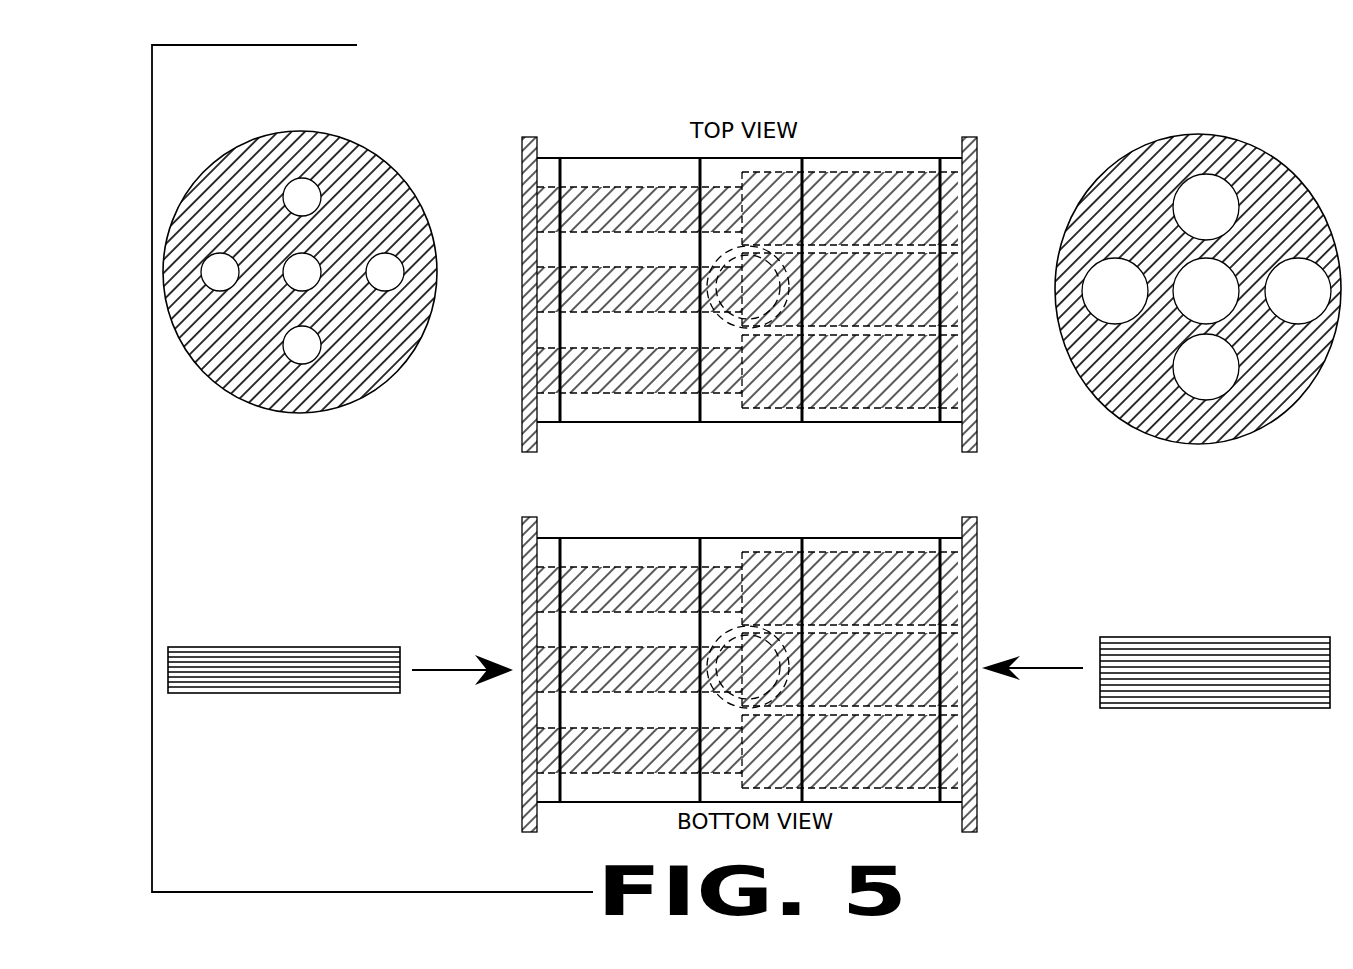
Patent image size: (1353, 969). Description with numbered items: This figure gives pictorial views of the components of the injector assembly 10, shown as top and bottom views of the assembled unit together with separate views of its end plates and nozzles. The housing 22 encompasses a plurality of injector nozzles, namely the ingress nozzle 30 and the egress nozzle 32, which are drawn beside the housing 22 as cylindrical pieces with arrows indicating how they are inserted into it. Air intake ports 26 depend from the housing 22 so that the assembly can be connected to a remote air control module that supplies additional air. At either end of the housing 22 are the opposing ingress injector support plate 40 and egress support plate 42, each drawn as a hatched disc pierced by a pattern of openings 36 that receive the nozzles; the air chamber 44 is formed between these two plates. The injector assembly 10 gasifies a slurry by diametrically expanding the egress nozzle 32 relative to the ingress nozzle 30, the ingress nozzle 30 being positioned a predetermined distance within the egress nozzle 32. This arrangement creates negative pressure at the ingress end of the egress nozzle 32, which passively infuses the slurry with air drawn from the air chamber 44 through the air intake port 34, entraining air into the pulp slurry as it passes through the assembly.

The injector assembly 10 is at (1043, 153).
The housing 22 is at (668, 422).
The air intake ports 26 is at (793, 647).
The ingress nozzle 30 is at (323, 695).
The egress nozzle 32 is at (1225, 705).
The air intake port 34 is at (740, 562).
The apertures 36 is at (357, 165).
The ingress injector support plate 40 is at (307, 410).
The egress support plate 42 is at (1220, 443).
The air chamber 44 is at (782, 547).